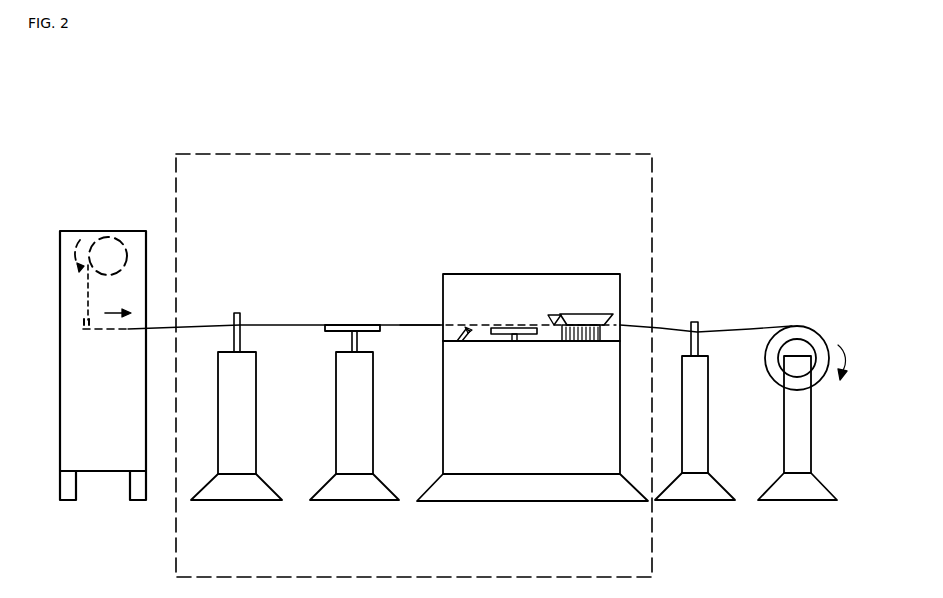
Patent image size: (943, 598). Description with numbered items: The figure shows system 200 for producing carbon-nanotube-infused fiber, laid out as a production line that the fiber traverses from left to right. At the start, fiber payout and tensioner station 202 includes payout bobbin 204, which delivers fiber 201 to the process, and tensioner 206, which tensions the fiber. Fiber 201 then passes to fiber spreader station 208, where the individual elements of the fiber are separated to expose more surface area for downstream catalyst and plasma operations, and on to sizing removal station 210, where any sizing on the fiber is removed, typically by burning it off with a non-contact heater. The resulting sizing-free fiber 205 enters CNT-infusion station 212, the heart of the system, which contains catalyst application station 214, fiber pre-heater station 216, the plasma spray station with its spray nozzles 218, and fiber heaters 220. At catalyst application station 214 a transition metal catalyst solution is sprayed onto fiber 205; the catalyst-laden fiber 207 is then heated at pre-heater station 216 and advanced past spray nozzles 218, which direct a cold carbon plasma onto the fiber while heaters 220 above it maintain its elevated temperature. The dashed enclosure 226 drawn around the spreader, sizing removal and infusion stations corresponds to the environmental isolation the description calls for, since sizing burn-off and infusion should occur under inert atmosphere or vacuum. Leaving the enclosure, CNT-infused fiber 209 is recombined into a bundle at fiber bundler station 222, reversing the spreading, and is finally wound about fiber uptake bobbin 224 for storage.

The system 200 is at (146, 71).
The fiber 201 is at (120, 332).
The fiber payout and tensioner station 202 is at (86, 335).
The payout bobbin 204 is at (100, 253).
The sizing-free fiber 205 is at (420, 330).
The tensioner 206 is at (76, 332).
The catalyst-laden fiber 207 is at (485, 322).
The fiber spreader station 208 is at (237, 302).
The CNT-infused fiber 209 is at (640, 330).
The sizing removal station 210 is at (348, 300).
The CNT-infusion station 212 is at (498, 255).
The catalyst application station 214 is at (458, 348).
The fiber pre-heater station 216 is at (502, 348).
The spray nozzles 218 is at (595, 348).
The fiber heaters 220 is at (585, 300).
The fiber bundler station 222 is at (700, 320).
The fiber uptake bobbin 224 is at (815, 340).
The enclosure 226 is at (414, 356).